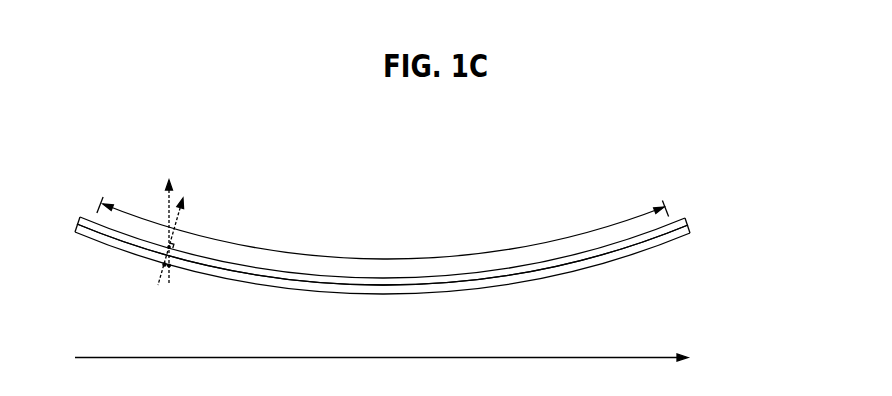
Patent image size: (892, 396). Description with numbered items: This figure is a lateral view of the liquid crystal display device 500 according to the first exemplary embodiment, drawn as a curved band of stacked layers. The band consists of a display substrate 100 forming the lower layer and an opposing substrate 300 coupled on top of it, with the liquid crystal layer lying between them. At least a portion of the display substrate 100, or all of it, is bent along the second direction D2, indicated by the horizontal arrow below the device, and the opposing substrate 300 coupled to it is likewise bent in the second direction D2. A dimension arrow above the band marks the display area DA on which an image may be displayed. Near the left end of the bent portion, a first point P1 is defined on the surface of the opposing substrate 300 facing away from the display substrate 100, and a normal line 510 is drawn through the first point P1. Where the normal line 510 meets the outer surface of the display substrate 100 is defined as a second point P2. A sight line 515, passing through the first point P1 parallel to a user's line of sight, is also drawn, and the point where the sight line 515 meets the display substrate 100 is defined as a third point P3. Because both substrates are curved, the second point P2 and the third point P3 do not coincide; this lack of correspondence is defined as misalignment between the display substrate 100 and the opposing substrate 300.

The liquid crystal display device 500 is at (433, 242).
The opposing substrate 300 is at (688, 218).
The display substrate 100 is at (688, 226).
The sight line 515 is at (171, 203).
The normal line 510 is at (176, 220).
The first point P1 is at (169, 246).
The second point P2 is at (163, 265).
The third point P3 is at (171, 269).
The display area DA is at (383, 228).
The second direction D2 is at (393, 357).